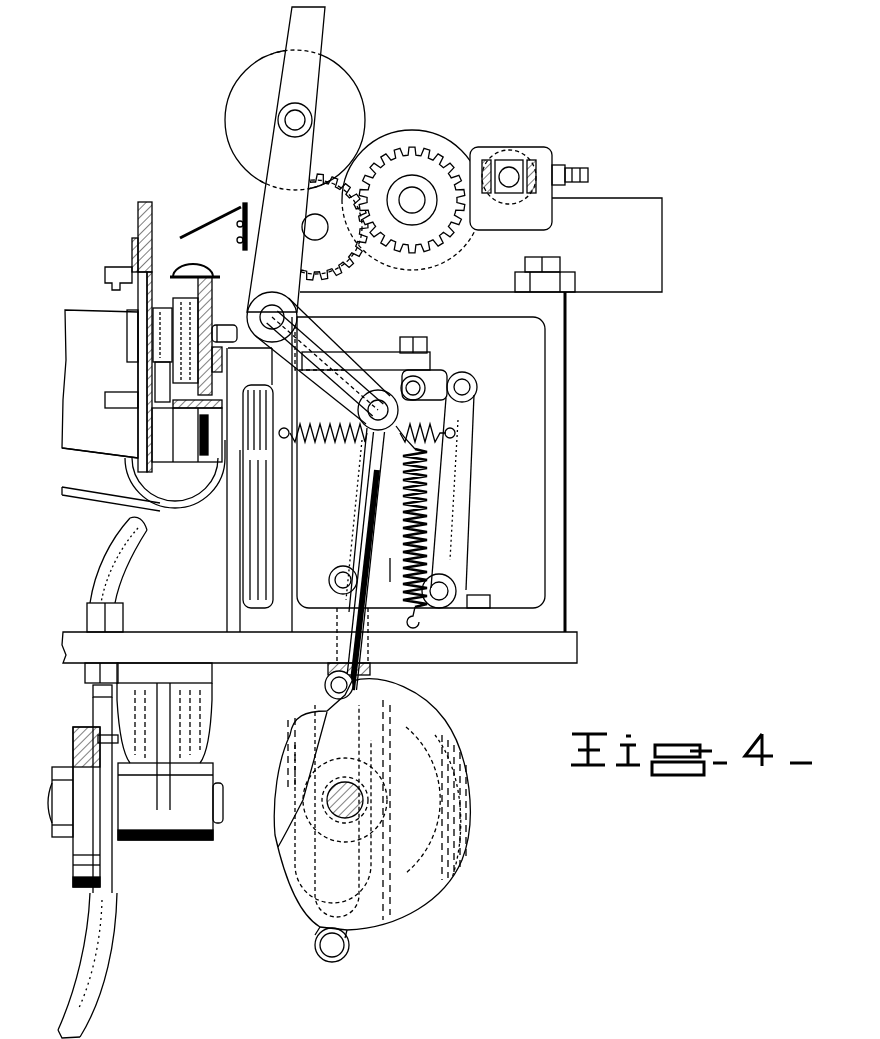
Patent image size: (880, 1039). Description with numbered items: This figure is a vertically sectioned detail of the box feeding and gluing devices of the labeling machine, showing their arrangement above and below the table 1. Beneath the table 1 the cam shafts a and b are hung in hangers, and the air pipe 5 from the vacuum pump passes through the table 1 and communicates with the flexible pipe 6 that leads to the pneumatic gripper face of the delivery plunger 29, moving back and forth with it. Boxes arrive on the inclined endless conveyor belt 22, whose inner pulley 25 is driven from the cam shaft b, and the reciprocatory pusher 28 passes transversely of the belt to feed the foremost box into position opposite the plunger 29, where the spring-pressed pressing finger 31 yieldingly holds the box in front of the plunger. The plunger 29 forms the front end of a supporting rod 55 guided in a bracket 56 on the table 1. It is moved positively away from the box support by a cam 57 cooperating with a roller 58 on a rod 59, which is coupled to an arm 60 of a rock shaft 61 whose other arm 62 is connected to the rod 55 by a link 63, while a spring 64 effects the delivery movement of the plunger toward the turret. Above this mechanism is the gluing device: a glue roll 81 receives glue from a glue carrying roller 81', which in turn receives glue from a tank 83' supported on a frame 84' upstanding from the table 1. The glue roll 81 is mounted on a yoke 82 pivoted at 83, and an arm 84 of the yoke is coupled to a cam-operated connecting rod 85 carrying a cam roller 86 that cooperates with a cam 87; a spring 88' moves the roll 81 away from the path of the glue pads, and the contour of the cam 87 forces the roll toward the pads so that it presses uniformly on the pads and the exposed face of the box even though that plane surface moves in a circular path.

The table 1 is at (456, 644).
The air pipe 5 is at (101, 958).
The flexible pipe 6 is at (118, 566).
The endless conveyor belt 22 is at (97, 498).
The inner pulley 25 is at (164, 478).
The reciprocatory pusher 28 is at (188, 306).
The delivery plunger 29 is at (209, 299).
The pressing finger 31 is at (192, 267).
The supporting rod 55 is at (383, 361).
The bracket 56 is at (250, 490).
The cam 57 is at (290, 746).
The roller 58 is at (325, 681).
The rod 59 is at (338, 596).
The arm 60 is at (390, 558).
The rock shaft 61 is at (450, 592).
The arm 62 is at (452, 492).
The link 63 is at (446, 384).
The spring 64 is at (343, 447).
The glue roll 81 is at (265, 120).
The glue carrying roller 81' is at (372, 186).
The yoke 82 is at (280, 193).
The pivot 83 is at (322, 360).
The tank 83' is at (481, 219).
The arm 84 is at (325, 365).
The frame 84' is at (458, 462).
The connecting rod 85 is at (363, 536).
The cam roller 86 is at (329, 947).
The cam 87 is at (282, 850).
The spring 88' is at (456, 527).
The cam shaft a is at (216, 793).
The cam shaft b is at (343, 812).